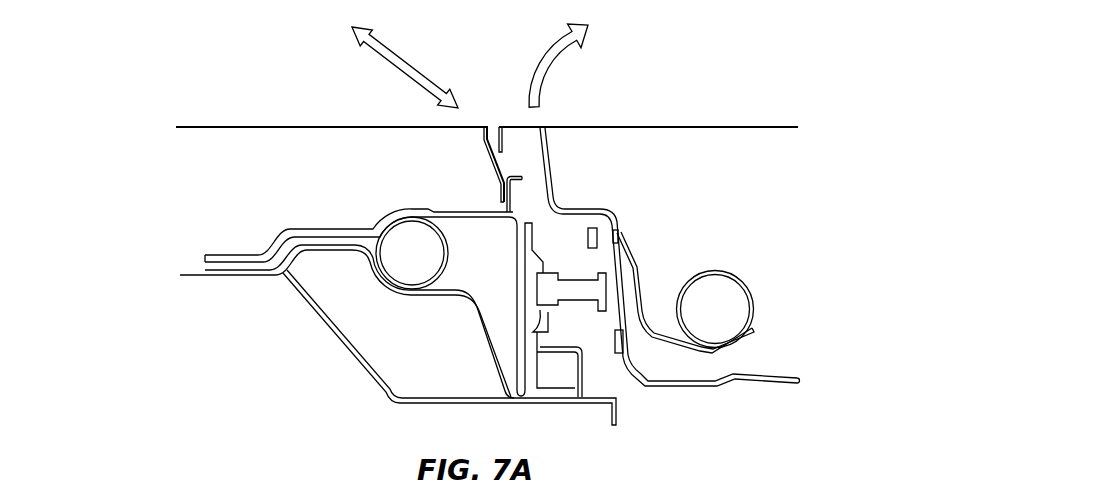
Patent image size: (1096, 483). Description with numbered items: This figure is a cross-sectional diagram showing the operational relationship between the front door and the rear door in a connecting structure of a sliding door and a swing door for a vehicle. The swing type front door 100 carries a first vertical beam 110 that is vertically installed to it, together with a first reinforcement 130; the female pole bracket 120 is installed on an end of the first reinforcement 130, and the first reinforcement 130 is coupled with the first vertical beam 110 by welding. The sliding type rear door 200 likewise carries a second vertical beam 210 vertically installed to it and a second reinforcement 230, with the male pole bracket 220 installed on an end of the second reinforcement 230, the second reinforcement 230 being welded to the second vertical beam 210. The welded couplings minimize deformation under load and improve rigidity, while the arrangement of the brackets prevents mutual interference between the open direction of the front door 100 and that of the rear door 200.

The front door 100 is at (669, 116).
The rear door 200 is at (269, 116).
The first vertical beam 110 is at (395, 267).
The female pole bracket 120 is at (623, 348).
The first reinforcement 130 is at (270, 243).
The second vertical beam 210 is at (737, 280).
The male pole bracket 220 is at (548, 292).
The second reinforcement 230 is at (642, 320).